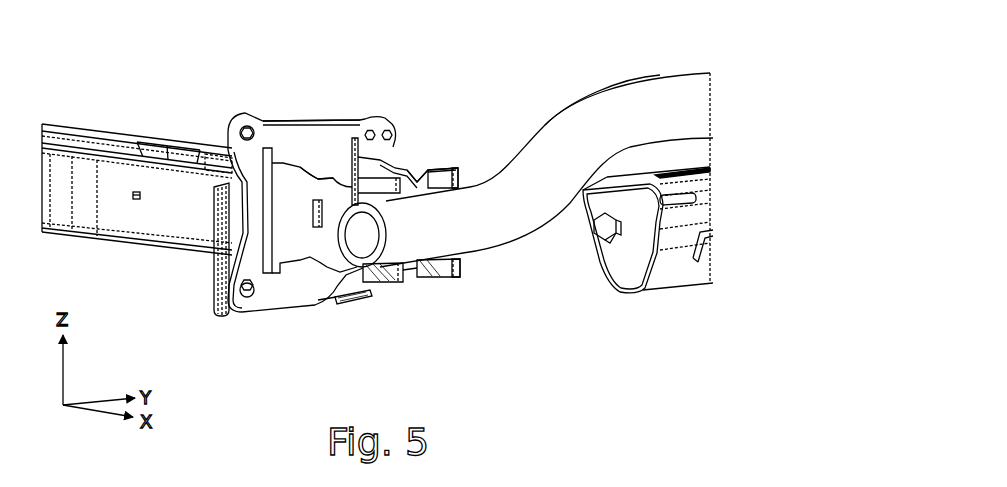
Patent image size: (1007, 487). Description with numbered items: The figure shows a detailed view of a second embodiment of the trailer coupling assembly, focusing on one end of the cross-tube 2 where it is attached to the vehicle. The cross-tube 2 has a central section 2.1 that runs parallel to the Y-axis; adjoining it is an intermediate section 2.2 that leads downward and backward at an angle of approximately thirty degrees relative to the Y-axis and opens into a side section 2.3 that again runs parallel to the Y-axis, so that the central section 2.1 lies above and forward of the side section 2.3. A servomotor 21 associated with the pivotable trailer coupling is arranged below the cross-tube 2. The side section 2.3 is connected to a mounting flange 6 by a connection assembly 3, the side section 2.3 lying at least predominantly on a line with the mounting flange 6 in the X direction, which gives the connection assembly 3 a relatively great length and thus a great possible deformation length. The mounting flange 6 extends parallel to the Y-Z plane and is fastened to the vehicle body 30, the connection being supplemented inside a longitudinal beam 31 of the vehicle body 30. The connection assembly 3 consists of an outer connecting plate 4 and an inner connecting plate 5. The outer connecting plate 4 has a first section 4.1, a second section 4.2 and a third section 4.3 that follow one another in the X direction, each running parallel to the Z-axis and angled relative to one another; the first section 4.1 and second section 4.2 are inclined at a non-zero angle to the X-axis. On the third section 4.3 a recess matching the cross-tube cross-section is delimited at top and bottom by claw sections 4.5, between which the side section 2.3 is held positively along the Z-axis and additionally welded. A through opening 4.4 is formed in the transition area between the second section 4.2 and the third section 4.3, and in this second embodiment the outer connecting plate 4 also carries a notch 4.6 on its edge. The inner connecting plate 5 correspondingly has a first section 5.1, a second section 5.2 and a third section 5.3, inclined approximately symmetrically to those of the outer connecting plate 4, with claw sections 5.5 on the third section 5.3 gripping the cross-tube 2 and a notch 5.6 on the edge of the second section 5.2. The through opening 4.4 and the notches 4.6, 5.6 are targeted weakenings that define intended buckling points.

The cross-tube 2 is at (543, 238).
The central section 2.1 is at (652, 70).
The intermediate section 2.2 is at (564, 95).
The side section 2.3 is at (420, 283).
The connection assembly 3 is at (317, 76).
The outer connecting plate 4 is at (335, 268).
The first section 4.1 is at (281, 151).
The second section 4.2 is at (306, 160).
The third section 4.3 is at (347, 283).
The through opening 4.4 is at (306, 222).
The claw section 4.5 is at (392, 293).
The notch 4.6 is at (343, 168).
The inner connecting plate 5 is at (374, 148).
The first section 5.1 is at (408, 150).
The second section 5.2 is at (423, 160).
The third section 5.3 is at (455, 166).
The claw section 5.5 is at (470, 172).
The notch 5.6 is at (444, 160).
The mounting flange 6 is at (226, 146).
The servomotor 21 is at (647, 298).
The vehicle body 30 is at (185, 142).
The longitudinal beam 31 is at (185, 142).